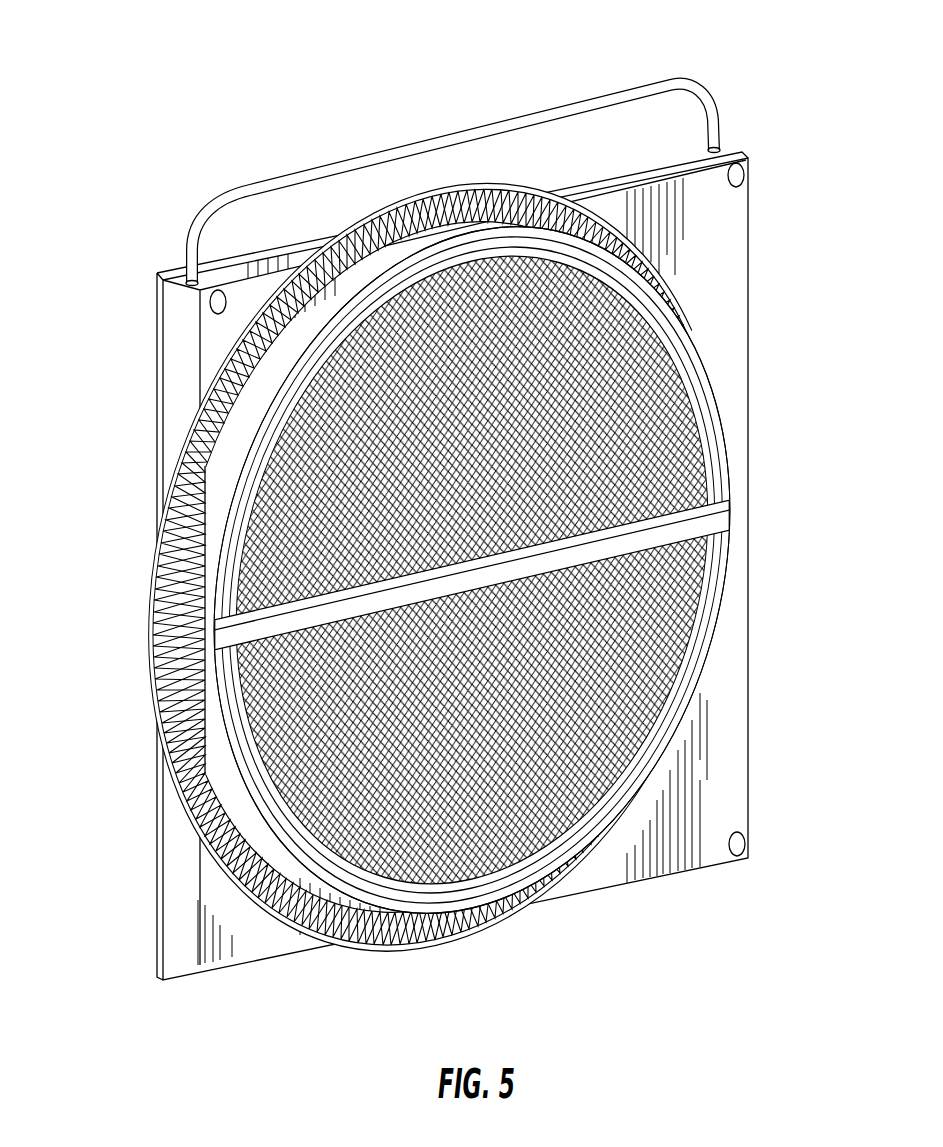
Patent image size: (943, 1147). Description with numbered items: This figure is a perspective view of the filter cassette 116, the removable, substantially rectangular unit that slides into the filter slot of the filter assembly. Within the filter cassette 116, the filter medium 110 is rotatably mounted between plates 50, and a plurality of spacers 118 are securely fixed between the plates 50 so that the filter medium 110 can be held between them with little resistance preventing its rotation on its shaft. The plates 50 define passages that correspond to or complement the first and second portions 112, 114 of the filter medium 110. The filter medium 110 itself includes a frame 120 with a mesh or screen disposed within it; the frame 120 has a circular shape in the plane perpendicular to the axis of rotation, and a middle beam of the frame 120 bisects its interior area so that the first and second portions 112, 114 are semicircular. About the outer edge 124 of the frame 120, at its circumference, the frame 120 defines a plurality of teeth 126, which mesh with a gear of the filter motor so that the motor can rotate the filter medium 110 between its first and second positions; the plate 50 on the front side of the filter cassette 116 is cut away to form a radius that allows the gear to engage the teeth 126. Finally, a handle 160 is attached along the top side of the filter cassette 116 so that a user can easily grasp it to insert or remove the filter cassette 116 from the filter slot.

The filter cassette 116 is at (733, 58).
The plates 50 is at (749, 758).
The spacers 118 is at (722, 153).
The handle 160 is at (583, 100).
The frame 120 is at (377, 570).
The outer edge 124 is at (138, 612).
The teeth 126 is at (280, 918).
The filter medium 110 is at (340, 460).
The first portion 112 is at (410, 398).
The second portion 114 is at (322, 760).